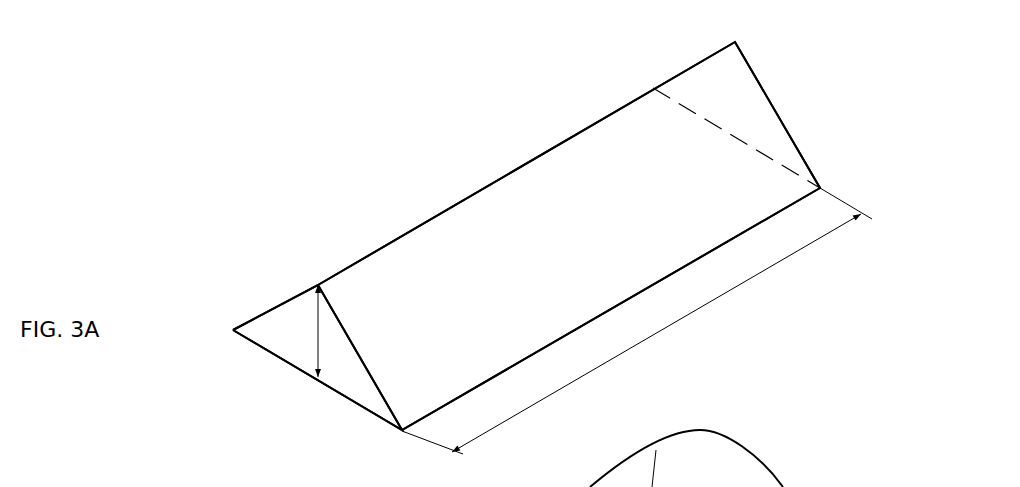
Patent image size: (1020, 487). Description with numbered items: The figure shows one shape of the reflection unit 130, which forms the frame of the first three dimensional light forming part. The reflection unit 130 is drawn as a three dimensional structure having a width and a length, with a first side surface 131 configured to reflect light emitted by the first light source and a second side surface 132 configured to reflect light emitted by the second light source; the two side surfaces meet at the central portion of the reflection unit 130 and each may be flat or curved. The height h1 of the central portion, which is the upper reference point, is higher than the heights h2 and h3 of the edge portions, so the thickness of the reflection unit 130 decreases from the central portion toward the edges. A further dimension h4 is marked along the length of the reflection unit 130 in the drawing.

The reflection unit 130 is at (526, 236).
The first side surface 131 is at (277, 305).
The second side surface 132 is at (547, 160).
The height of central portion h1 is at (327, 331).
The height of edge portion h2 is at (232, 333).
The height of edge portion h3 is at (402, 432).
The length dimension h4 is at (637, 321).